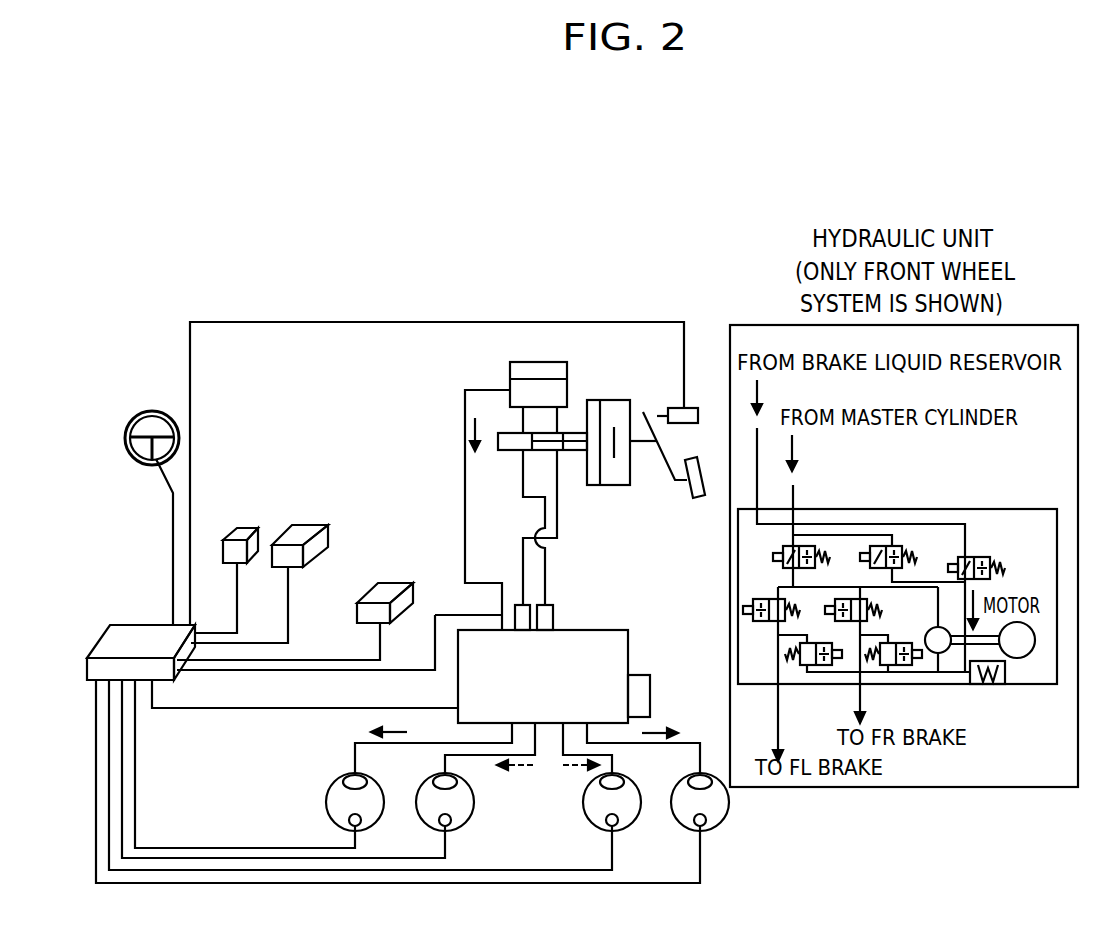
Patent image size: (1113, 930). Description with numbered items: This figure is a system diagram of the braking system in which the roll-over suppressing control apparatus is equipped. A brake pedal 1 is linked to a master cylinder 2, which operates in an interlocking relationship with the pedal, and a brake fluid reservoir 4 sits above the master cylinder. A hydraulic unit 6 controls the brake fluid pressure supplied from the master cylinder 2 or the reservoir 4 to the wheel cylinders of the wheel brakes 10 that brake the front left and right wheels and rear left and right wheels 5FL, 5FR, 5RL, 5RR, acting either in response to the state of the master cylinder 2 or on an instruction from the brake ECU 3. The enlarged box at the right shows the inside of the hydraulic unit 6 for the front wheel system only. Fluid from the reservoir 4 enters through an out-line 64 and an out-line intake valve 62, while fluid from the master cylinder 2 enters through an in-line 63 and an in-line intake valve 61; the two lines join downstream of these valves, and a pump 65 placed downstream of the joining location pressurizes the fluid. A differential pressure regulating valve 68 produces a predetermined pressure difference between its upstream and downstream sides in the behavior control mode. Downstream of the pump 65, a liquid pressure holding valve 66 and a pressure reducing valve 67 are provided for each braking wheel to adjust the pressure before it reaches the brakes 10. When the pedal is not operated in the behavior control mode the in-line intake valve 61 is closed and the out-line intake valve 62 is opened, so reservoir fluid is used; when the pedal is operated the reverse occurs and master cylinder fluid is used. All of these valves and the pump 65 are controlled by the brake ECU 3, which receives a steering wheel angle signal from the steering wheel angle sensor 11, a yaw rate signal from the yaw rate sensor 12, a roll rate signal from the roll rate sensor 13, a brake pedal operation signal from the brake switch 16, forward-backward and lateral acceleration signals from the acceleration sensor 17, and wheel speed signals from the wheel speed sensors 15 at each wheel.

The brake pedal 1 is at (697, 499).
The master cylinder 2 is at (570, 452).
The braking controller (brake ECU) 3 is at (175, 678).
The brake fluid reservoir 4 is at (510, 366).
The hydraulic unit 6 is at (614, 630).
The wheel brake 10 is at (348, 778).
The steering wheel angle sensor 11 is at (138, 420).
The yaw rate sensor 12 is at (305, 532).
The roll rate sensor 13 is at (388, 583).
The wheel speed sensor 15 is at (347, 823).
The brake switch 16 is at (688, 408).
The forward-backward and lateral acceleration sensor 17 is at (240, 540).
The front left wheel 5FL is at (312, 805).
The front right wheel 5FR is at (481, 817).
The rear left wheel 5RL is at (577, 826).
The rear right wheel 5RR is at (729, 838).
The in-line intake valve 61 is at (885, 545).
The out-line intake valve 62 is at (982, 557).
The in-line 63 is at (528, 498).
The out-line 64 is at (465, 412).
The pump 65 is at (930, 656).
The liquid pressure holding valve 66 is at (768, 666).
The pressure reducing valve 67 is at (810, 666).
The differential pressure regulating valve 68 is at (803, 545).